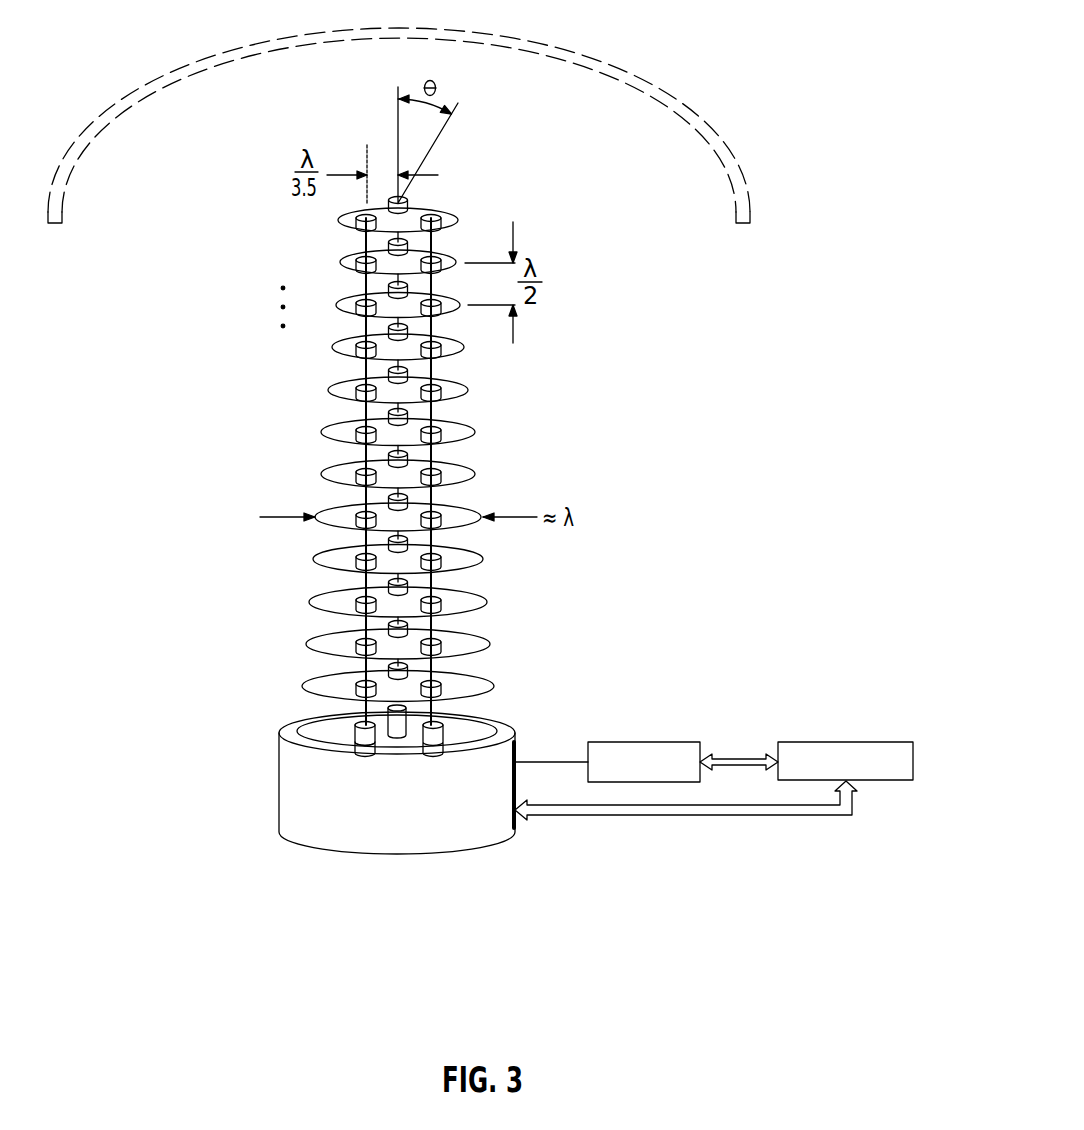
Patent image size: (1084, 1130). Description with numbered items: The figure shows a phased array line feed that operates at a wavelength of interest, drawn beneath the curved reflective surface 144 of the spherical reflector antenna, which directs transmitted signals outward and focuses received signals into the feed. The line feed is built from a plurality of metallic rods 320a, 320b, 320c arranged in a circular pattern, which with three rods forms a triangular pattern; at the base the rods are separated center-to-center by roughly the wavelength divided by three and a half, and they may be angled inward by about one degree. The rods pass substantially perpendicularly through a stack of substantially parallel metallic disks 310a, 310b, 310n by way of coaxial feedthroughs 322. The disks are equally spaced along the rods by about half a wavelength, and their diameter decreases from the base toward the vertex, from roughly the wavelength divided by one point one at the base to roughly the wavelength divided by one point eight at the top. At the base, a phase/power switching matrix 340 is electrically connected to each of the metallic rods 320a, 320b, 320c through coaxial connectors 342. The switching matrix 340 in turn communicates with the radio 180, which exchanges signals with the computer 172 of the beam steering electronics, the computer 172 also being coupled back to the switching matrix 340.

The reflective surface 144 is at (689, 111).
The metallic disk 310a is at (342, 217).
The metallic disk 310b is at (347, 260).
The metallic disk 310n is at (300, 738).
The metallic rod 320a is at (345, 712).
The metallic rod 320b is at (455, 712).
The metallic rod 320c is at (436, 756).
The coaxial feedthrough 322 is at (438, 602).
The phase/power switching matrix 340 is at (461, 827).
The coaxial connector 342 is at (357, 758).
The radio 180 is at (681, 742).
The computer 172 is at (913, 762).